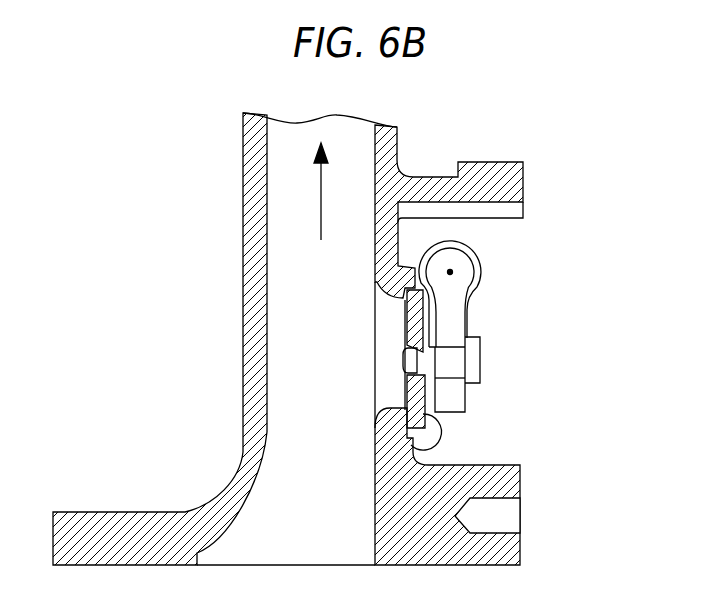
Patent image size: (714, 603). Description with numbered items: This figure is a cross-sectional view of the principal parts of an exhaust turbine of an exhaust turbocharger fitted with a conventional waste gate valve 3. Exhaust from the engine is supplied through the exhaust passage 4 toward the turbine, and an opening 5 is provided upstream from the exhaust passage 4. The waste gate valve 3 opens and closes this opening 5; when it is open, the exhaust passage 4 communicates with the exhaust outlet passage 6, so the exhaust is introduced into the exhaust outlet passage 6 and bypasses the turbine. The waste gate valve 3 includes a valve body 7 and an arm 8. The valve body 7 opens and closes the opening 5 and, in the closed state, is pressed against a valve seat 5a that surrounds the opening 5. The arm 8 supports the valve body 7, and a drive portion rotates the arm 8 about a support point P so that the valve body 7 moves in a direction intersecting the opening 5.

The exhaust passage 4 is at (324, 518).
The exhaust outlet passage 6 is at (512, 442).
The opening 5 is at (382, 338).
The valve seat 5a is at (400, 437).
The valve body 7 is at (410, 313).
The waste gate valve 3 is at (498, 345).
The support point P is at (453, 272).
The arm 8 is at (468, 398).